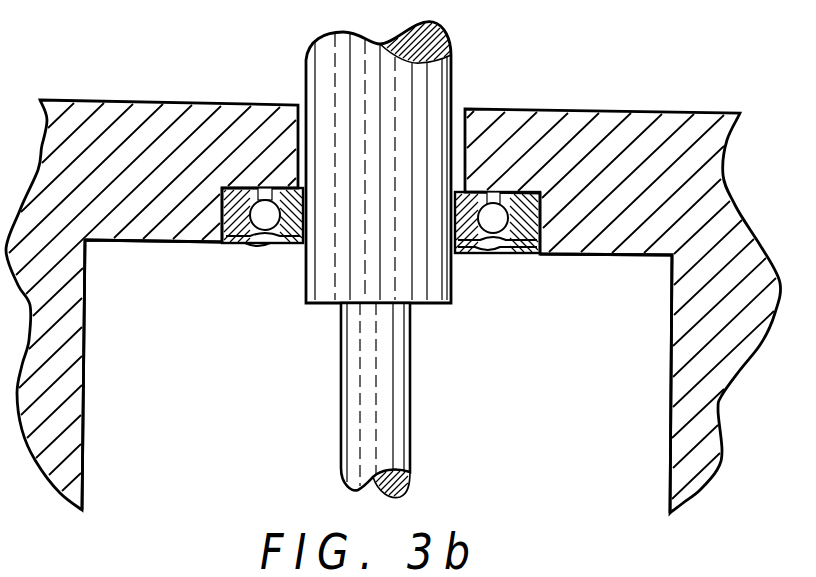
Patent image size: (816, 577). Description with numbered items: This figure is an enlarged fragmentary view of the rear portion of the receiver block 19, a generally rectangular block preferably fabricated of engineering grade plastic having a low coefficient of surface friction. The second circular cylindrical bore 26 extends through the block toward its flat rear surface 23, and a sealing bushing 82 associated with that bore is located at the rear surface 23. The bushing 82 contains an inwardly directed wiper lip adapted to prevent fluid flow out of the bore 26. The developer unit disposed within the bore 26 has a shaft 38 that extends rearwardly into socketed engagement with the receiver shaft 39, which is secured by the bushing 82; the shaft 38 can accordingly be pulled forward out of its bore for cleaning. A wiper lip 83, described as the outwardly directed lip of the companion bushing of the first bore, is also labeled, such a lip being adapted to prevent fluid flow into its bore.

The rear surface 23 is at (87, 101).
The receiver block 19 is at (623, 182).
The second circular cylindrical bore 26 is at (562, 434).
The receiver shaft 39 is at (388, 105).
The shaft 38 is at (412, 333).
The wiper lip 83 is at (300, 248).
The sealing bushing 82 is at (530, 255).